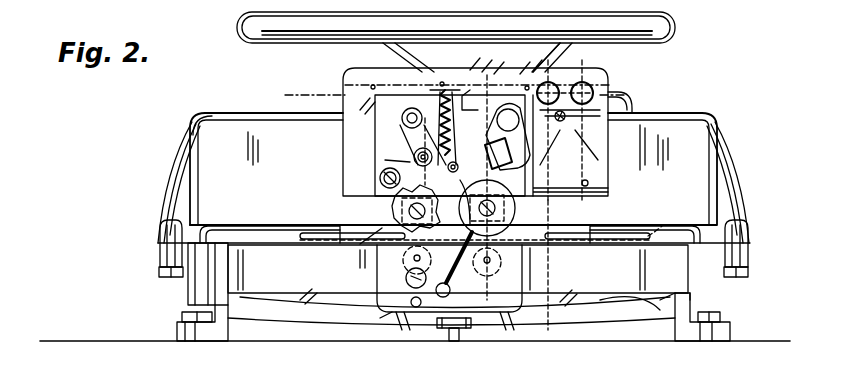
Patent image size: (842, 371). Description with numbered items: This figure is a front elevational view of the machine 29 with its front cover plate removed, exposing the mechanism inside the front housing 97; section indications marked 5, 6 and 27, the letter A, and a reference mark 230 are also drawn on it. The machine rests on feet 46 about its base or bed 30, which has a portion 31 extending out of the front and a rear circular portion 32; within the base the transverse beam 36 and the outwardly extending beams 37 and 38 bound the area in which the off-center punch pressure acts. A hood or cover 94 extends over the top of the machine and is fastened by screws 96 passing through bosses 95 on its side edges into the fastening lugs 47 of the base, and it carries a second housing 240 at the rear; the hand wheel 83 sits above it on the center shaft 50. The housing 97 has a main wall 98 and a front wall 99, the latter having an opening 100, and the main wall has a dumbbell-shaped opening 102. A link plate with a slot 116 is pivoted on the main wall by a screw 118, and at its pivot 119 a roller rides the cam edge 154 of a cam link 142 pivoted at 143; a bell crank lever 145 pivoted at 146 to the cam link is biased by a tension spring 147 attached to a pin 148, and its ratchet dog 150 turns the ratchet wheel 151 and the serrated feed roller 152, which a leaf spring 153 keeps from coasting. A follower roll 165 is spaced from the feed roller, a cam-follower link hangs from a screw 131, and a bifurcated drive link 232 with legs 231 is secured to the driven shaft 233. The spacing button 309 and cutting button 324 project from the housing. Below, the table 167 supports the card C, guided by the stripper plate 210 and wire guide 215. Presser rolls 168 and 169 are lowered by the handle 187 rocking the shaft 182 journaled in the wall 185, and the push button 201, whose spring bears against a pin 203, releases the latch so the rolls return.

The operating hand wheel 83 is at (680, 23).
The housing 97 is at (345, 73).
The screw 131 is at (616, 107).
The machine 29 is at (702, 103).
The hood or cover 94 is at (198, 114).
The bosses 95 is at (168, 197).
The bosses or fastening lugs 47 is at (165, 258).
The screws 96 is at (168, 277).
The table 167 is at (280, 242).
The wire guide 215 is at (592, 227).
The card C is at (650, 234).
The work guide and stripper plate 210 is at (318, 232).
The rear circular portion or outer ring 32 is at (190, 298).
The feet 46 is at (178, 330).
The wall 185 is at (540, 272).
The second follower roll 165 is at (532, 256).
The transverse beam 36 is at (302, 312).
The beam 37 is at (562, 63).
The beam 38 is at (576, 60).
The front portion 31 is at (640, 298).
The presser roll 169 is at (572, 300).
The base or bed 30 is at (731, 303).
The push button 201 is at (411, 300).
The presser roll 168 is at (406, 278).
The ratchet wheel 151 is at (404, 260).
The ratchet dog 150 is at (462, 187).
The operating arm or handle 187 is at (490, 266).
The shaft 182 is at (482, 292).
The section line 5 is at (510, 63).
The section A is at (524, 61).
The center shaft 50 is at (470, 334).
The pin 203 is at (382, 316).
The main wall 98 is at (380, 140).
The section line 27 is at (280, 88).
The screw 118 is at (402, 115).
The pivot 119 is at (405, 128).
The tension spring 147 is at (442, 90).
The pin 148 is at (444, 92).
The slot 116 is at (445, 84).
The cam link 142 is at (414, 155).
The cam edge 154 is at (385, 160).
The pivot 143 is at (380, 179).
The section line 6 is at (418, 131).
The pivot 146 is at (455, 163).
The opening 102 is at (482, 150).
The bell crank lever 145 is at (487, 208).
The serrated feed roller 152 is at (392, 216).
The leaf spring 153 is at (362, 244).
The opening 100 is at (534, 176).
The cutting operation button 324 is at (594, 92).
The second housing 240 is at (602, 110).
The bifurcated drive link 232 is at (560, 122).
The driven shaft 233 is at (527, 86).
The spacing operation button 309 is at (542, 80).
The front wall 99 is at (626, 120).
The link 230 is at (548, 196).
The legs 231 is at (598, 196).